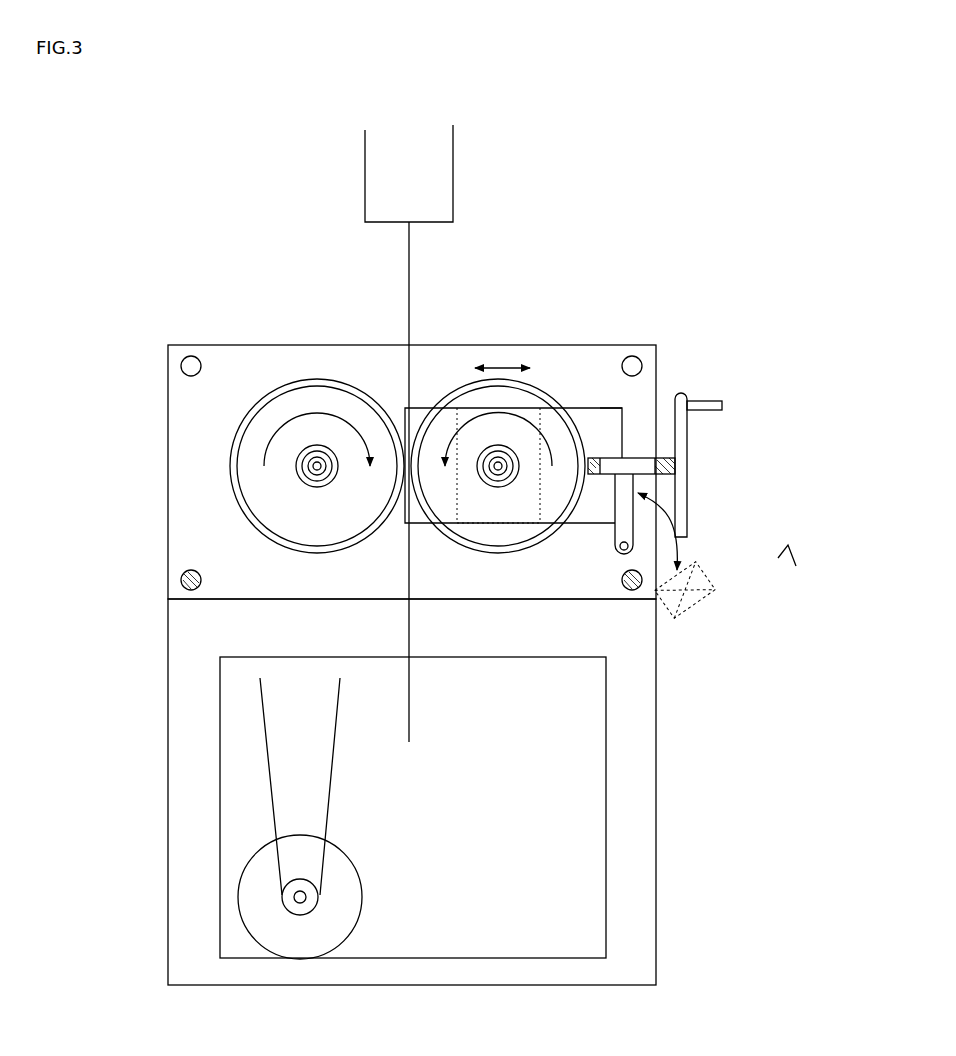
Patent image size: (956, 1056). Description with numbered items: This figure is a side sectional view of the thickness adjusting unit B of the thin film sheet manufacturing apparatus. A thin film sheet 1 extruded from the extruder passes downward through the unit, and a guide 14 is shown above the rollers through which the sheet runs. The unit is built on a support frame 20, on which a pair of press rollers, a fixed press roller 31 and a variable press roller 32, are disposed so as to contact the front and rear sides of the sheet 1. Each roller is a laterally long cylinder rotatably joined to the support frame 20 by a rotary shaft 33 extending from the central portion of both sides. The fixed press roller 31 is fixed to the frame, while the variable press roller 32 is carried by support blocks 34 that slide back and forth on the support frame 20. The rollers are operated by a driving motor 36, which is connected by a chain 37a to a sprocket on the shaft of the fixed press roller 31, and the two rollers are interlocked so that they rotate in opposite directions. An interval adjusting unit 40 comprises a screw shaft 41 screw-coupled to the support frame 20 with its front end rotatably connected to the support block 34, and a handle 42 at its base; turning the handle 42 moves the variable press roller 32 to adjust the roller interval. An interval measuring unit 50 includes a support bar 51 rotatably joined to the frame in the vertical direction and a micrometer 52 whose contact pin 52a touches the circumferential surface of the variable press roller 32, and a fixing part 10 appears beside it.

The thin film sheet 1 is at (409, 277).
The wire guide 14 is at (365, 178).
The thickness adjusting unit B is at (147, 343).
The support frame 20 is at (168, 545).
The fixed press roller 31 is at (230, 464).
The variable press roller 32 is at (548, 387).
The rotary shaft 33 is at (313, 438).
The support block 34 is at (490, 437).
The driving motor 36 is at (240, 878).
The chain 37a is at (268, 778).
The interval adjusting unit 40 is at (700, 472).
The screw shaft 41 is at (663, 458).
The handle 42 is at (688, 452).
The interval measuring unit 50 is at (795, 559).
The support bar 51 is at (633, 517).
The micrometer 52 is at (645, 494).
The contact pin 52a is at (600, 408).
The fixing part 10 is at (695, 598).